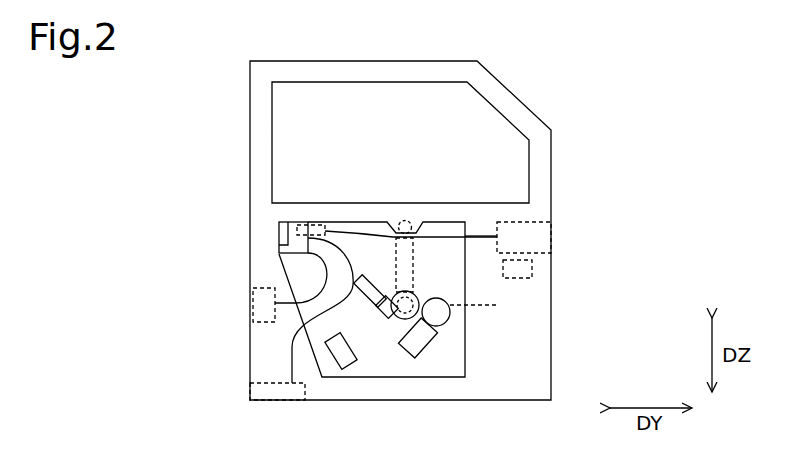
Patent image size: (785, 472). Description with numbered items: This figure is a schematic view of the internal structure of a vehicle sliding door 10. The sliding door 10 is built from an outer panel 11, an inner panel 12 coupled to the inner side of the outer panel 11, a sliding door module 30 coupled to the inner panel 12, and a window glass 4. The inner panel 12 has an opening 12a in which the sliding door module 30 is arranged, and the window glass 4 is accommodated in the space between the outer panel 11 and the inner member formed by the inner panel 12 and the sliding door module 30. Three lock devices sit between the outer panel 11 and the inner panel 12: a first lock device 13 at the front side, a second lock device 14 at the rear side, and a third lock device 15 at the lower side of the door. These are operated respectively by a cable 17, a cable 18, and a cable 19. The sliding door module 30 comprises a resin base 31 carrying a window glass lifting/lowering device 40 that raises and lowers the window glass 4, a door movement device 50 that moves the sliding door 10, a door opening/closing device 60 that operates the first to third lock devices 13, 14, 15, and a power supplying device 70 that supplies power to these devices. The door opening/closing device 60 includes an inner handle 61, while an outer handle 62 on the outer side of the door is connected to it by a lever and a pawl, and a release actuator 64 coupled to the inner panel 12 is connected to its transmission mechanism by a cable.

The sliding door 10 is at (646, 112).
The outer panel 11 is at (552, 176).
The window glass 4 is at (482, 122).
The inner panel 12 is at (549, 318).
The opening 12a is at (458, 358).
The first lock device 13 is at (253, 306).
The second lock device 14 is at (552, 240).
The third lock device 15 is at (275, 392).
The cable 17 is at (288, 312).
The cable 18 is at (485, 240).
The cable 19 is at (292, 366).
The sliding door module 30 is at (439, 219).
The resin base 31 is at (458, 332).
The window glass lifting/lowering device 40 is at (419, 276).
The door movement device 50 is at (421, 362).
The door opening/closing device 60 is at (276, 232).
The inner handle 61 is at (278, 240).
The outer handle 62 is at (312, 224).
The release actuator 64 is at (525, 271).
The power supplying device 70 is at (348, 364).